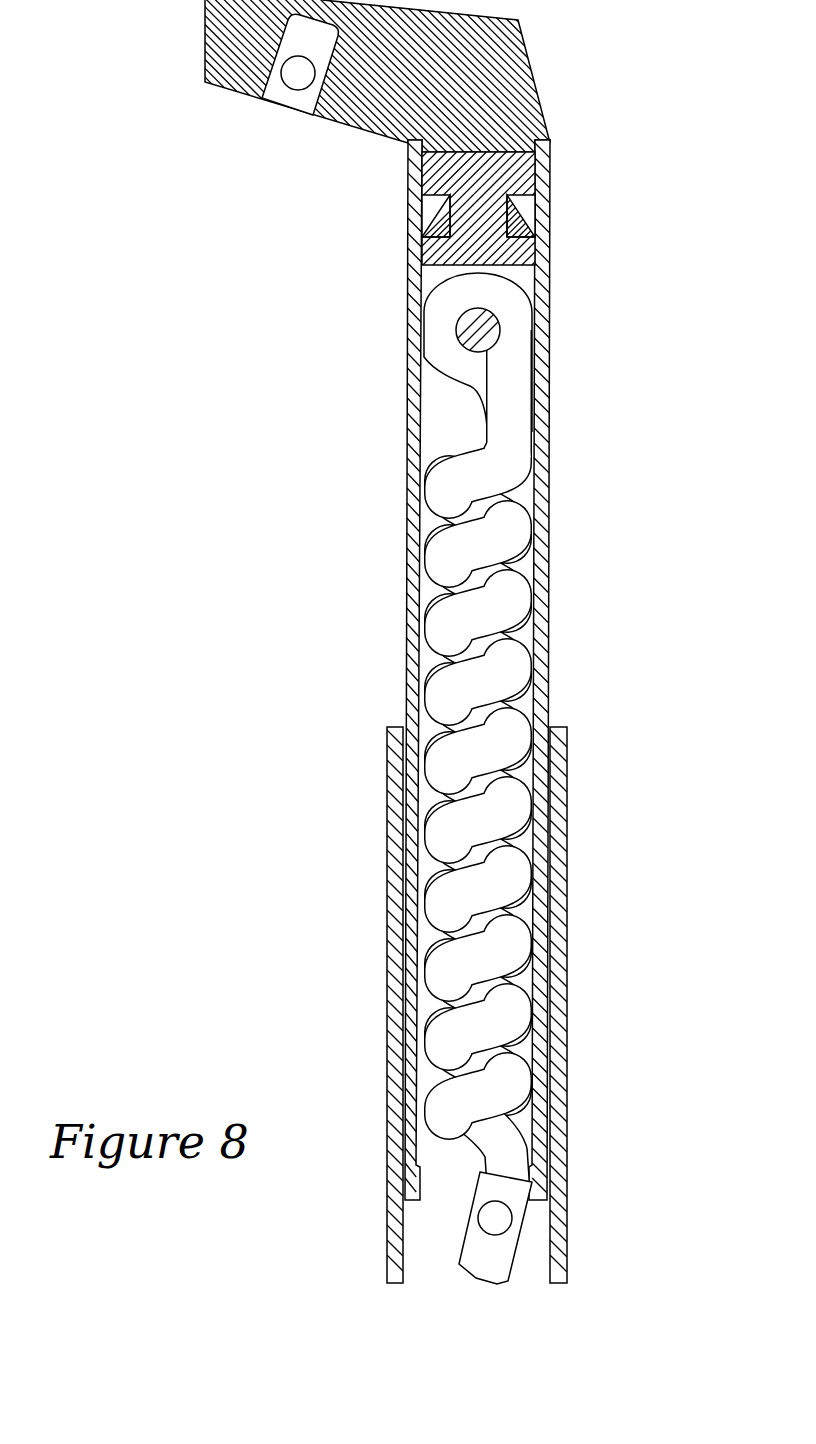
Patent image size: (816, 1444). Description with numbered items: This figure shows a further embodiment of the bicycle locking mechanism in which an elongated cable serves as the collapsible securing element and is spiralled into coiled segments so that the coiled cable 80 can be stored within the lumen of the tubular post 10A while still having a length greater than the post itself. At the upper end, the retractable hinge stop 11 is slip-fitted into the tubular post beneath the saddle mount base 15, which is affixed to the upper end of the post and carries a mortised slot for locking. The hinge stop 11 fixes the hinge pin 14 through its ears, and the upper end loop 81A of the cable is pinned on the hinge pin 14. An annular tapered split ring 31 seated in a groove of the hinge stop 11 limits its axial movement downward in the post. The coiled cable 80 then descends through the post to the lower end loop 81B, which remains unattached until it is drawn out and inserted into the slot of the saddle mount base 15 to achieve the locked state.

The saddle mount base 15 is at (487, 50).
The retractable hinge stop 11 is at (527, 181).
The annular tapered split ring 31 is at (438, 231).
The hinge pin 14 is at (468, 330).
The upper spring hook 81A is at (502, 372).
The coil spring 80 is at (465, 693).
The outer tube 10A is at (563, 805).
The lower spring hook 81B is at (502, 1245).